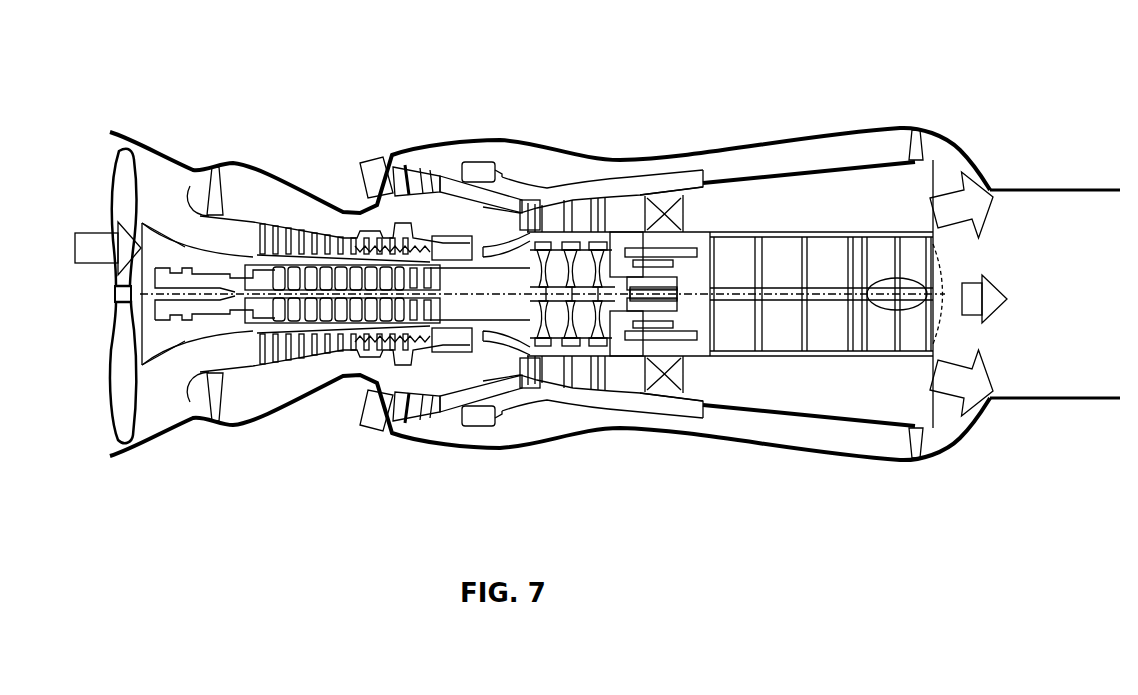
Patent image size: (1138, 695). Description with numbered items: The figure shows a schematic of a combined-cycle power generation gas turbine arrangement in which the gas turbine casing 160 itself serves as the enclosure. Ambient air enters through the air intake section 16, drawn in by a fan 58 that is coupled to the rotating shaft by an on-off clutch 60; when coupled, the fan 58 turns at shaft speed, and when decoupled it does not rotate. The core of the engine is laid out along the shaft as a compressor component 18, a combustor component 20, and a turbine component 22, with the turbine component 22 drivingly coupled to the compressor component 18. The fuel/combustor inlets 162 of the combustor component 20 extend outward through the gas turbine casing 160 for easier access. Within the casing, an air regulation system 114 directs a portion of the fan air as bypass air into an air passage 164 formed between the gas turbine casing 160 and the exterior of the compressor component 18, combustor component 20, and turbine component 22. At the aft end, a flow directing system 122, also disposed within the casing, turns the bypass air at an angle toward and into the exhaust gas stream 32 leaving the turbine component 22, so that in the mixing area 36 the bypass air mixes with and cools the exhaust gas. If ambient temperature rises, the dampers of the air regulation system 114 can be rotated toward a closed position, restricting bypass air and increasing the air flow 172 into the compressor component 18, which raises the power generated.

The air intake section 16 is at (482, 138).
The compressor component 18 is at (308, 368).
The combustor component 20 is at (493, 438).
The turbine component 22 is at (569, 412).
The exhaust gas stream 32 is at (963, 308).
The mixing area 36 is at (1051, 296).
The fan 58 is at (112, 362).
The on-off clutch 60 is at (114, 295).
The air regulation system 114 is at (208, 187).
The flow directing system 122 is at (922, 140).
The gas turbine casing 160 is at (591, 282).
The fuel/combustor inlets 162 is at (360, 162).
The air passage 164 is at (803, 158).
The air flow 172 is at (83, 258).